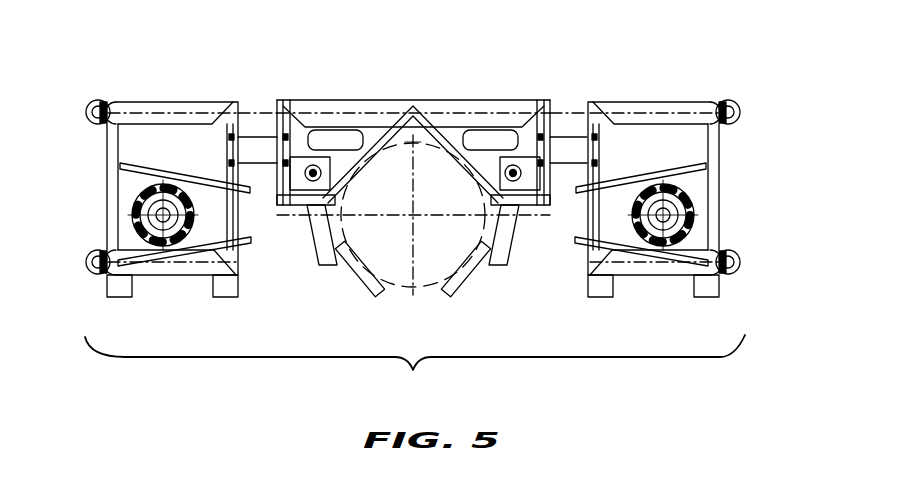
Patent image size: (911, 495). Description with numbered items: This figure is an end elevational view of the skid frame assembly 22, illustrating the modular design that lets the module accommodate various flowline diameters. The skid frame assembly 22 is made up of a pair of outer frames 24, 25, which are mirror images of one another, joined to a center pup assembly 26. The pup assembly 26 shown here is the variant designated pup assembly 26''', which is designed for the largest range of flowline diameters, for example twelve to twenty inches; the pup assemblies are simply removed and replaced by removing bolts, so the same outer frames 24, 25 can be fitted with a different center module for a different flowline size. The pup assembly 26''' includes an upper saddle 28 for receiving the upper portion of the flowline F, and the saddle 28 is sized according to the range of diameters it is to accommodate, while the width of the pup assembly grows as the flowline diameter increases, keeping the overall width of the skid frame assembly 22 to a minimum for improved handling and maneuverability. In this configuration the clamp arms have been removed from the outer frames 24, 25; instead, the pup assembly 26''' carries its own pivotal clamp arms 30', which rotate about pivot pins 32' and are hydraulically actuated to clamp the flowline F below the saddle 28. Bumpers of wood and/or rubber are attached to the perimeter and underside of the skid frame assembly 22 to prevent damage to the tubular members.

The skid frame assembly 22 is at (138, 50).
The outer frame 24 is at (211, 101).
The outer frame 25 is at (638, 100).
The center pup assembly 26 is at (414, 185).
The pup assembly 26''' is at (413, 69).
The upper saddle 28 is at (383, 128).
The pivotal clamp arm 30' is at (414, 286).
The pivot pin 32' is at (414, 230).
The flowline F is at (420, 290).